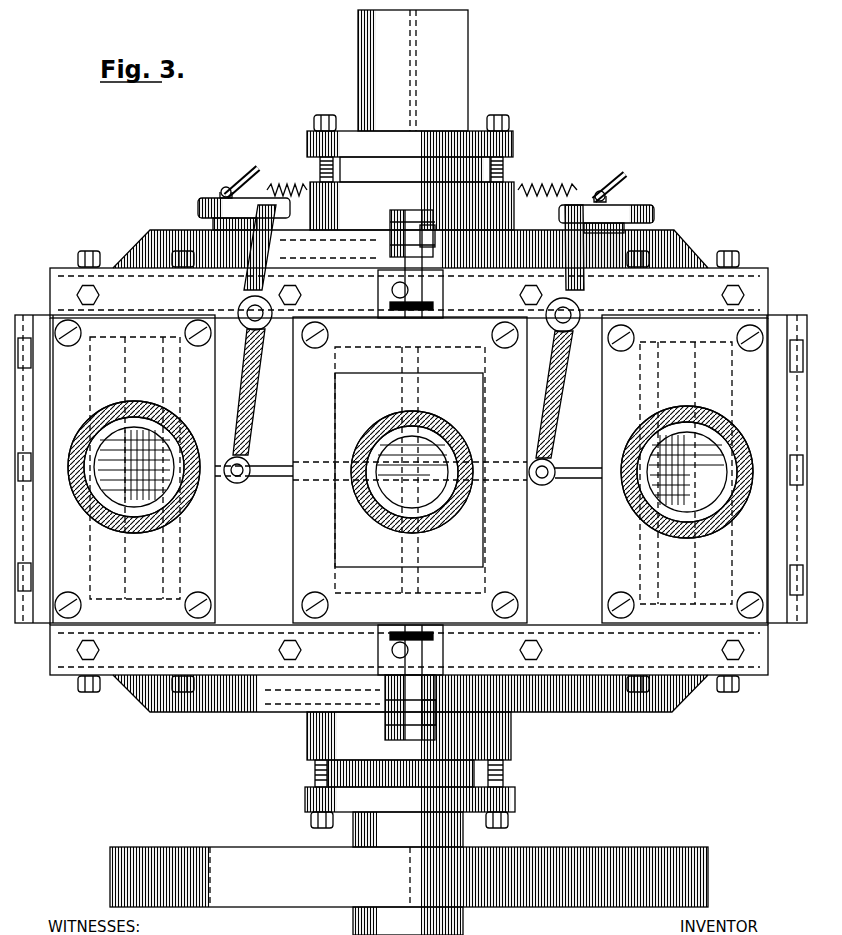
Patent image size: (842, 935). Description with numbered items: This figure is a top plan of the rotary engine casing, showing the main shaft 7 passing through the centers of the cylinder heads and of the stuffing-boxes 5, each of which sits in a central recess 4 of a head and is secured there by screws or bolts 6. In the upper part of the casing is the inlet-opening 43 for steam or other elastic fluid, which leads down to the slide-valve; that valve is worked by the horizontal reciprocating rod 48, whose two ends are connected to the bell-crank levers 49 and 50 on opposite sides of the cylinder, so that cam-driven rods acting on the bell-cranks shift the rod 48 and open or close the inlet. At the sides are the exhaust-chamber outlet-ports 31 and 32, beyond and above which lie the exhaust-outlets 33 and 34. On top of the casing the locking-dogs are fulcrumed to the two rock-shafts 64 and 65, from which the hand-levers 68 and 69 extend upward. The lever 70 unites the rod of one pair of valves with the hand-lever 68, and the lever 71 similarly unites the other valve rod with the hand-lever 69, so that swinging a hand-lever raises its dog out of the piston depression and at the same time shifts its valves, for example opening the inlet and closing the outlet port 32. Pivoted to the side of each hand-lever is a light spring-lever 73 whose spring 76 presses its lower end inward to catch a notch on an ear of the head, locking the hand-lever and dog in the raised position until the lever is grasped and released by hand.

The main shaft 7 is at (413, 70).
The stuffing-box 5 is at (513, 146).
The screw or bolt 6 is at (513, 174).
The recess 4 is at (410, 471).
The reciprocating rod 48 is at (392, 296).
The bell-crank lever 50 is at (435, 240).
The bell-crank lever 49 is at (438, 705).
The rock-shaft 65 is at (212, 220).
The hand-lever 68 is at (650, 212).
The rock-shaft 64 is at (625, 228).
The hand-lever 69 is at (254, 212).
The spring-lever 73 is at (242, 190).
The spring 76 is at (230, 186).
The lever 71 is at (248, 382).
The lever 70 is at (556, 384).
The exhaust-outlet 33 is at (97, 505).
The outlet-port 31 is at (145, 468).
The inlet-opening 43 is at (435, 505).
The outlet-port 32 is at (640, 490).
The exhaust-outlet 34 is at (697, 525).